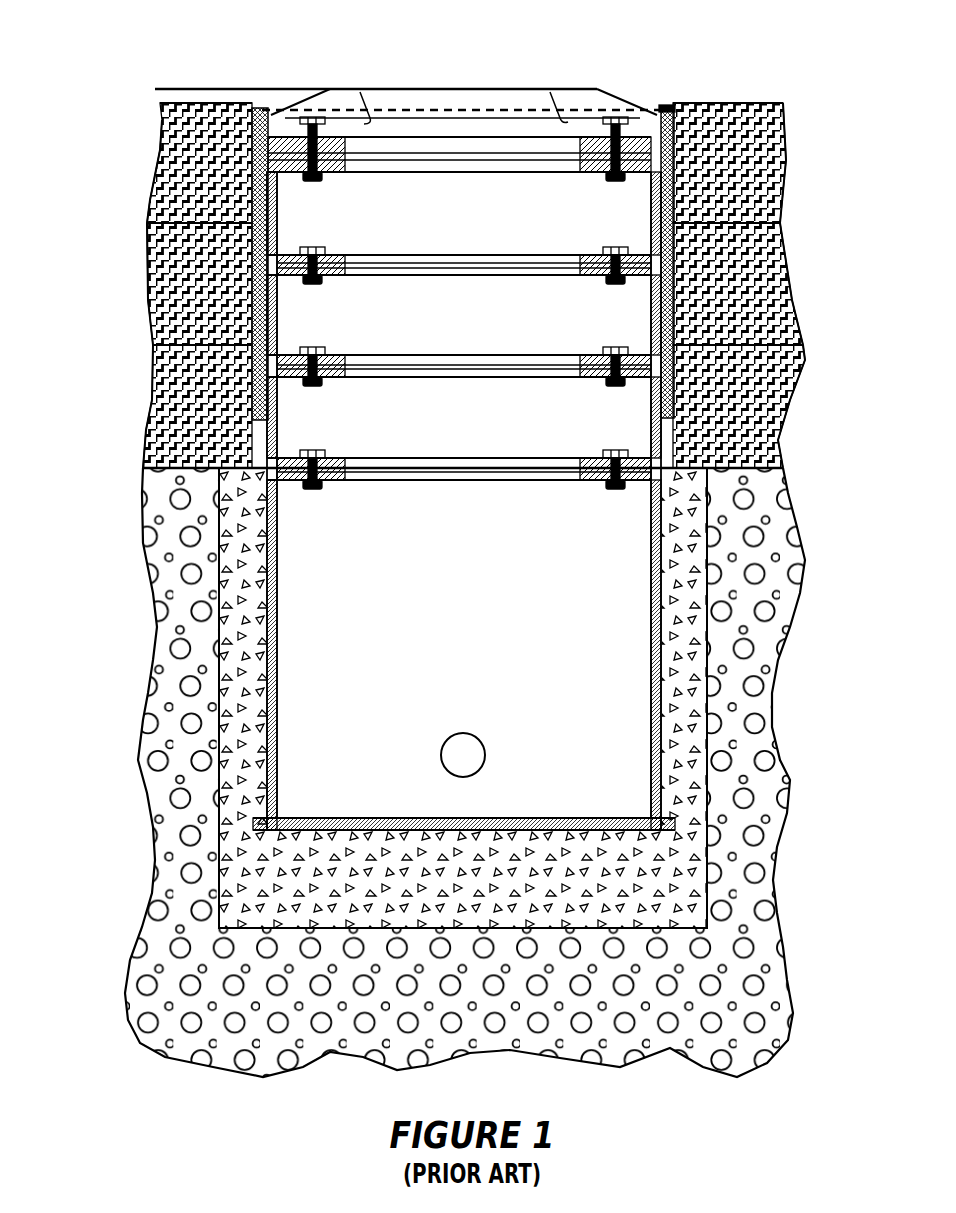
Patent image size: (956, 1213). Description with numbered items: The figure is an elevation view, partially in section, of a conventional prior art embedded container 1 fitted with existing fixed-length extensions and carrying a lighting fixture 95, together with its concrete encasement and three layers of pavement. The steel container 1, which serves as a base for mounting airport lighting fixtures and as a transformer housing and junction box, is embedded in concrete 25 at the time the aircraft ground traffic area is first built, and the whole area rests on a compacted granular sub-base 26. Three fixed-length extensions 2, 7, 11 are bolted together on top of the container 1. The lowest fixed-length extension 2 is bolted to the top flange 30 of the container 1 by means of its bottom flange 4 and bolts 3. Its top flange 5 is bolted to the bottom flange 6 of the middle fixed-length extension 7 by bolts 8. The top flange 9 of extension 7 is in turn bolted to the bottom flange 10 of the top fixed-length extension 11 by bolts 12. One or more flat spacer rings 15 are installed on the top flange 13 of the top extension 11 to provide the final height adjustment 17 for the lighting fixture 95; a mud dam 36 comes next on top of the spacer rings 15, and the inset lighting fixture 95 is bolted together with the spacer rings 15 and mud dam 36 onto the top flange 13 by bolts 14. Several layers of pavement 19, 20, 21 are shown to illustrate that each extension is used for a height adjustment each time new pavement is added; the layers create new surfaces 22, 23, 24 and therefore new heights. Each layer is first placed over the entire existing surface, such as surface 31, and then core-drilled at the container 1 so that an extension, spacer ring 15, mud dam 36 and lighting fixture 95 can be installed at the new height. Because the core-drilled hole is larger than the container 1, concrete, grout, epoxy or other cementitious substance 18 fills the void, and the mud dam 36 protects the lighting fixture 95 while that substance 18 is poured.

The container 1 is at (280, 712).
The fixed-length extension 2 is at (270, 418).
The bolts 3 is at (318, 489).
The bottom flange 4 is at (320, 455).
The top flange 5 is at (320, 382).
The bottom flange 6 is at (320, 352).
The fixed-length extension 7 is at (270, 315).
The bolts 8 is at (316, 387).
The top flange 9 is at (320, 280).
The bottom flange 10 is at (316, 252).
The fixed-length extension 11 is at (278, 210).
The bolts 12 is at (316, 285).
The top flange 13 is at (322, 178).
The bolts 14 is at (316, 182).
The flat spacer rings 15 is at (500, 175).
The final height adjustment 17 is at (160, 89).
The cementitious substance 18 is at (258, 112).
The layer of pavement 19 is at (152, 402).
The layer of pavement 20 is at (148, 280).
The layer of pavement 21 is at (160, 165).
The surface 22 is at (175, 345).
The surface 23 is at (185, 223).
The surface 24 is at (165, 100).
The concrete 25 is at (230, 720).
The compacted granular sub-base 26 is at (170, 907).
The top flange 30 is at (320, 490).
The surface 31 is at (170, 465).
The mud dam 36 is at (662, 108).
The lighting fixture 95 is at (448, 89).